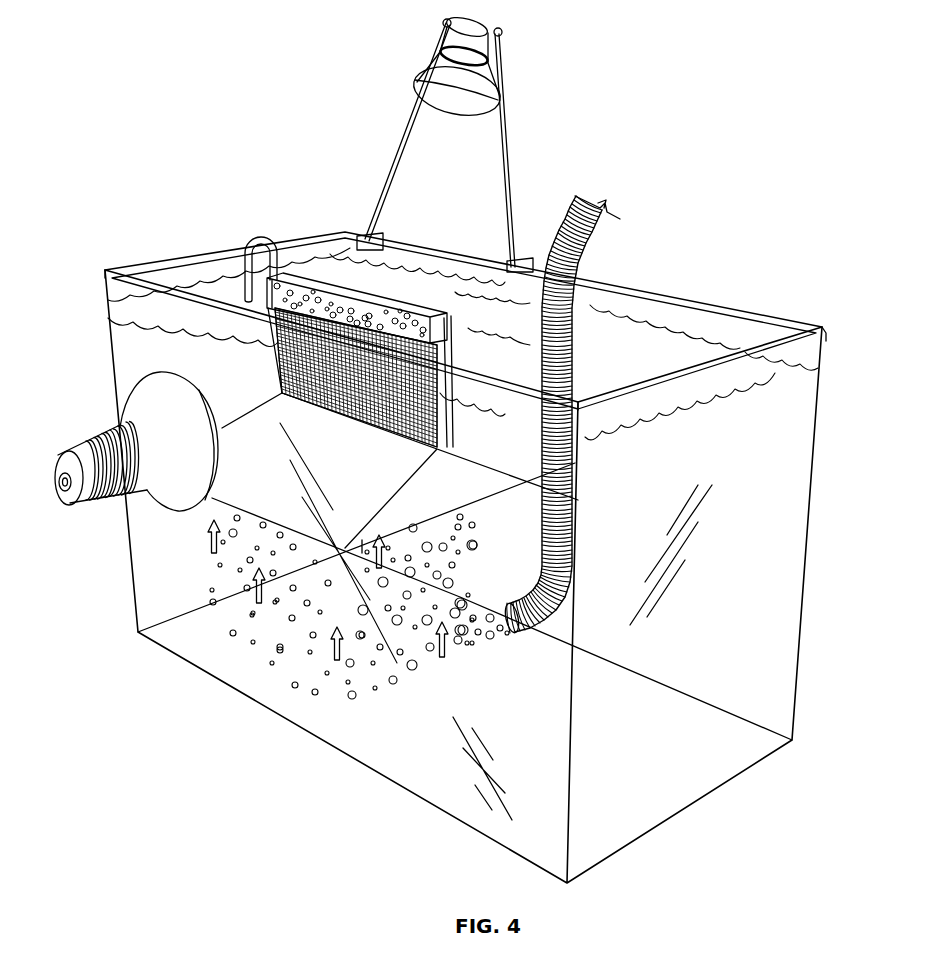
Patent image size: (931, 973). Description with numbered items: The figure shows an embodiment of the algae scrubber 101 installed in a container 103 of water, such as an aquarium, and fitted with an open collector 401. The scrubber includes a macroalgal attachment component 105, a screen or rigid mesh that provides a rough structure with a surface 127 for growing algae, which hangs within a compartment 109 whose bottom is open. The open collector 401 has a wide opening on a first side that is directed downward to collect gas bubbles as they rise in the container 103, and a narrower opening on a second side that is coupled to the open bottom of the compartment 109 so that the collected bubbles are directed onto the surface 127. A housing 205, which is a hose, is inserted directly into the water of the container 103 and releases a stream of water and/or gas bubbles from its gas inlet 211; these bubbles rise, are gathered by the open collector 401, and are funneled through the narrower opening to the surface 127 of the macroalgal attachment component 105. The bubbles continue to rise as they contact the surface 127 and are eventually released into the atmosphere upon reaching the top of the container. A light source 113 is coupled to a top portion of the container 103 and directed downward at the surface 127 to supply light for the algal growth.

The algae scrubber 101 is at (275, 380).
The container 103 is at (782, 318).
The macroalgal attachment component 105 is at (275, 327).
The compartment 109 is at (397, 298).
The light source 113 is at (467, 118).
The surface 127 is at (437, 372).
The housing 205 is at (537, 557).
The gas inlet 211 is at (513, 633).
The open collector 401 is at (490, 495).